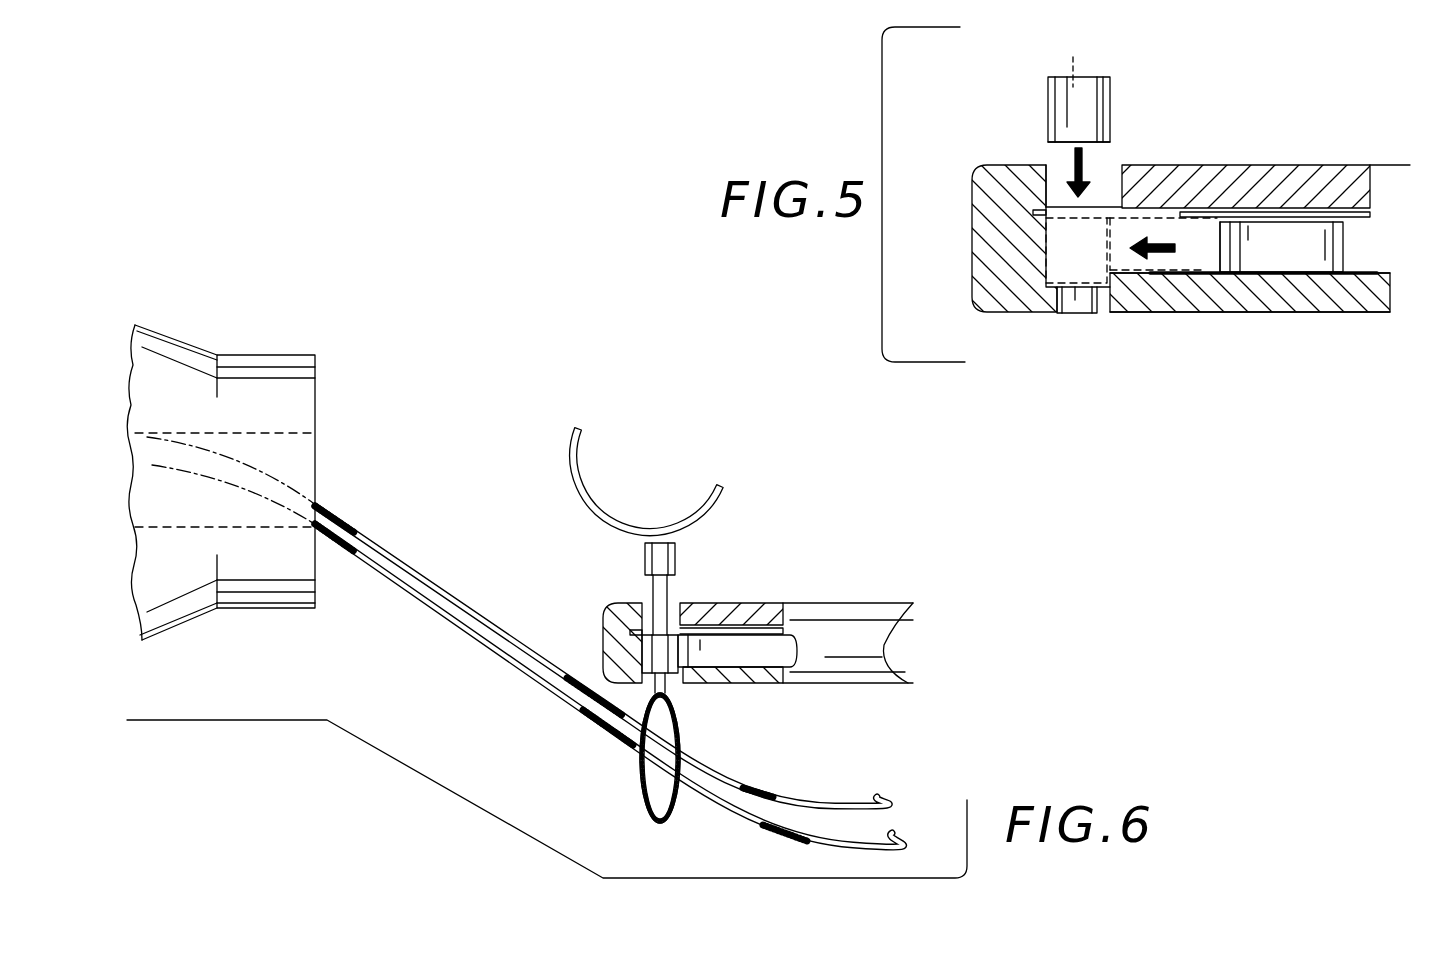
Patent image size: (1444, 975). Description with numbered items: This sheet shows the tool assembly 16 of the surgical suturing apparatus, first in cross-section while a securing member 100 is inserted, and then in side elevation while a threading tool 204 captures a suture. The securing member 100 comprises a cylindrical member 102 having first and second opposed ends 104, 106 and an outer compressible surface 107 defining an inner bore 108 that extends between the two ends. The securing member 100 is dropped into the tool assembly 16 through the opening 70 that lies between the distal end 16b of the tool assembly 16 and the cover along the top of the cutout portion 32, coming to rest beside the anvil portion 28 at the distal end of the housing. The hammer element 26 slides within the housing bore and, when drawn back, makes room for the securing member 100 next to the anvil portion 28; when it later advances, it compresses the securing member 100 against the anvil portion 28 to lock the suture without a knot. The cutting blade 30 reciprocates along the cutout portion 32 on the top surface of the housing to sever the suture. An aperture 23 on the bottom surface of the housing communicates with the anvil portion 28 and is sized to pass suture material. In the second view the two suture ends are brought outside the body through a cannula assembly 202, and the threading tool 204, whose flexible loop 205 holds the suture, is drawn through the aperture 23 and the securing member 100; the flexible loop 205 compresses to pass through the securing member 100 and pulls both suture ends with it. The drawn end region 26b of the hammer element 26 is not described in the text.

In FIG. 5, the tool assembly 16 is at (1356, 151).
In FIG. 6, the tool assembly 16 is at (826, 586).
In FIG. 5, the distal end of the tool assembly 16b is at (985, 166).
In FIG. 5, the aperture 23 is at (1072, 318).
In FIG. 5, the hammer element 26 is at (1310, 248).
In FIG. 6, the hammer element 26 is at (745, 656).
In FIG. 5, the slide member end 26b is at (1218, 250).
In FIG. 5, the anvil portion 28 is at (1046, 175).
In FIG. 5, the cutting blade 30 is at (1303, 214).
In FIG. 6, the cutting blade 30 is at (740, 627).
In FIG. 5, the cutout portion 32 is at (1257, 200).
In FIG. 5, the opening 70 is at (1108, 176).
In FIG. 5, the securing member 100 is at (1040, 85).
In FIG. 6, the securing member 100 is at (685, 675).
In FIG. 5, the cylindrical member 102 is at (1103, 100).
In FIG. 5, the first end 104 is at (1096, 77).
In FIG. 5, the second end 106 is at (1110, 143).
In FIG. 5, the outer compressible surface 107 is at (1048, 118).
In FIG. 5, the inner bore 108 is at (1072, 58).
In FIG. 6, the cannula assembly 202 is at (268, 342).
In FIG. 6, the threading tool 204 is at (590, 470).
In FIG. 6, the flexible loop 205 is at (663, 826).